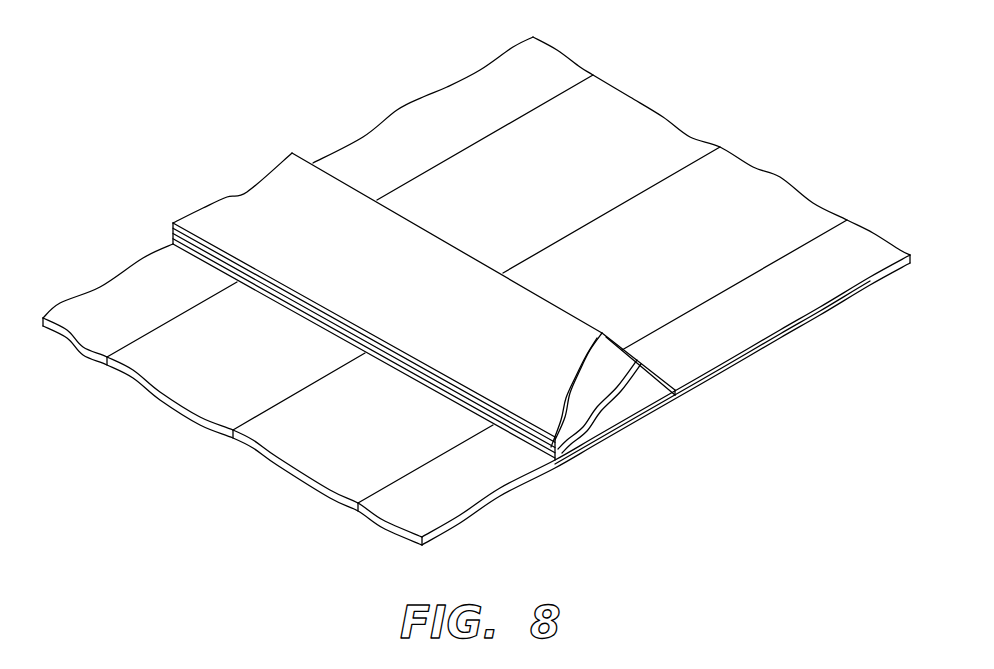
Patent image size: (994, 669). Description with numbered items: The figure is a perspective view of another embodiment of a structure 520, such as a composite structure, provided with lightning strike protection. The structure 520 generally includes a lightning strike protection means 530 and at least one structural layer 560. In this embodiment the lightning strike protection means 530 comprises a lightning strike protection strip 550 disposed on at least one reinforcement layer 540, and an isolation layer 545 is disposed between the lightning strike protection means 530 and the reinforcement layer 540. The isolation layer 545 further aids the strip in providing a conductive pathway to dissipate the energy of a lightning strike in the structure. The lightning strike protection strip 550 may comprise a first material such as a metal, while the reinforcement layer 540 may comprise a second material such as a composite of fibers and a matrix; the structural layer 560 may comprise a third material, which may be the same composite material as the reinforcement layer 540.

The structure 520 is at (476, 291).
The lightning strike protection means 530 is at (243, 192).
The reinforcement layer 540 is at (645, 387).
The isolation layer 545 is at (615, 350).
The lightning strike protection strip 550 is at (565, 325).
The structural layer 560 is at (657, 127).